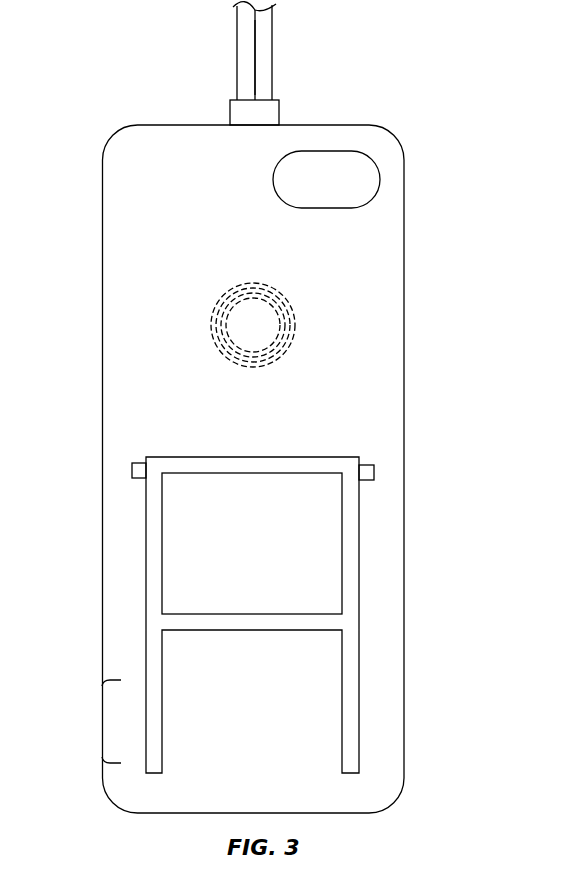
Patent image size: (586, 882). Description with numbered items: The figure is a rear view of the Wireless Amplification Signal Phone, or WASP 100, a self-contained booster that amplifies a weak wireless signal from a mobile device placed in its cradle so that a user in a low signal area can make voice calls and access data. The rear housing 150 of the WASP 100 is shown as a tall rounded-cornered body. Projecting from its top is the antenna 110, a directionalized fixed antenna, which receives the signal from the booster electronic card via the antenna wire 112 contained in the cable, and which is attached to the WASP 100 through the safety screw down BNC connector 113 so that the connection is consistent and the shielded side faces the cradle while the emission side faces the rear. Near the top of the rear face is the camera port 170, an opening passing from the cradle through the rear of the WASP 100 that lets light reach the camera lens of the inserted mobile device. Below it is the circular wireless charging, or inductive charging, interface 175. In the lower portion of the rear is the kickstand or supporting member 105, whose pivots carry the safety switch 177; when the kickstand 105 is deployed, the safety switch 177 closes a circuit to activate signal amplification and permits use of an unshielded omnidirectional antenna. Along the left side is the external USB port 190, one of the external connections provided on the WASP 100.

The Wireless Amplification Signal Phone (WASP) 100 is at (436, 79).
The kickstand/supporting member 105 is at (348, 540).
The antenna 110 is at (272, 56).
The antenna wire 112 is at (255, 68).
The safety screw down BNC connector 113 is at (280, 110).
The case body 150 is at (103, 442).
The camera port 170 is at (380, 180).
The wireless charging/inductive charging interface 175 is at (296, 318).
The safety switch 177 is at (374, 472).
The external USB port 190 is at (102, 722).